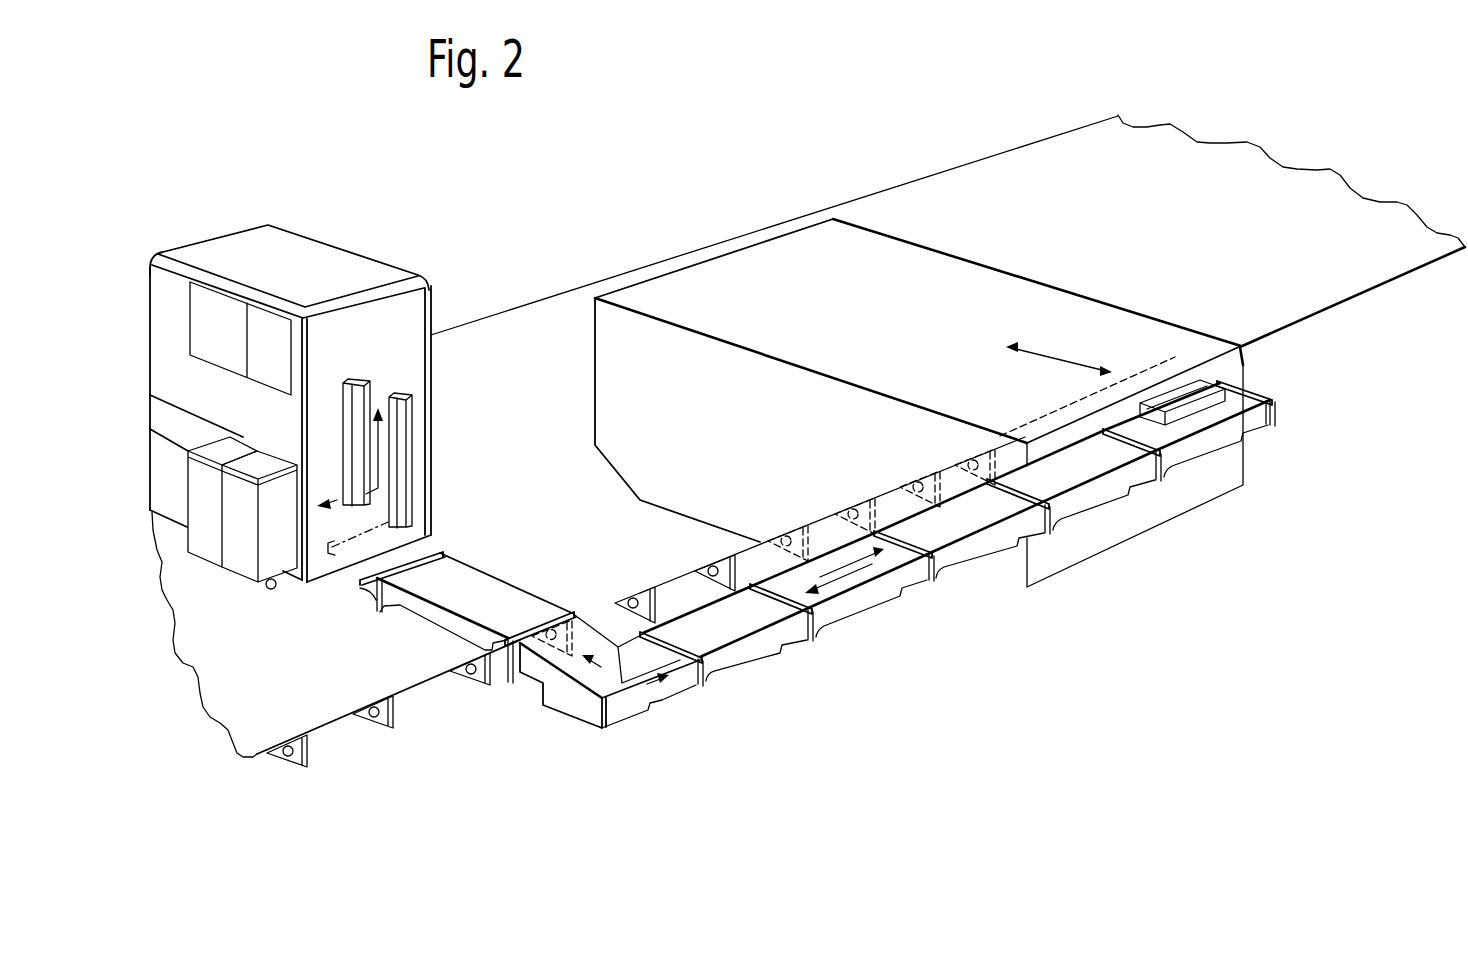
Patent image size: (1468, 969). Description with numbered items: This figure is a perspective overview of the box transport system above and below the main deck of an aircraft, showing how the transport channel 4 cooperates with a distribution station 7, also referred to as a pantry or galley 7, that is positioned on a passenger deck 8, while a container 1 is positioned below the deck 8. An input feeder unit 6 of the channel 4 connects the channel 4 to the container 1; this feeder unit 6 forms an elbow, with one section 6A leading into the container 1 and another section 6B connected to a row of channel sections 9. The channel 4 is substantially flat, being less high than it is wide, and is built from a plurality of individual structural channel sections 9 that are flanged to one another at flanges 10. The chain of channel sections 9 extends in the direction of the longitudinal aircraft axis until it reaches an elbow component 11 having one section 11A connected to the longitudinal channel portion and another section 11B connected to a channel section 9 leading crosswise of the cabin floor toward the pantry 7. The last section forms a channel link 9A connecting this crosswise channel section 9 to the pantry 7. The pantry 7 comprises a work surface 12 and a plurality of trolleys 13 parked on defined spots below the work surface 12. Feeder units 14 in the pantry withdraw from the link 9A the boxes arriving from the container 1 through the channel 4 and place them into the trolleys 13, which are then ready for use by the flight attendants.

The container 1 is at (748, 268).
The transport channel 4 is at (805, 640).
The input feeder unit 6 is at (1253, 375).
The feeder unit section 6A is at (1187, 397).
The feeder unit section 6B is at (1217, 433).
The distribution station 7 is at (296, 254).
The passenger deck 8 is at (1245, 294).
The channel section 9 is at (487, 590).
The channel link 9A is at (412, 556).
The flange 10 is at (377, 604).
The elbow component 11 is at (612, 731).
The elbow section 11A is at (677, 682).
The elbow section 11B is at (592, 645).
The work surface 12 is at (242, 411).
The trolley 13 is at (215, 548).
The feeder unit 14 is at (353, 381).